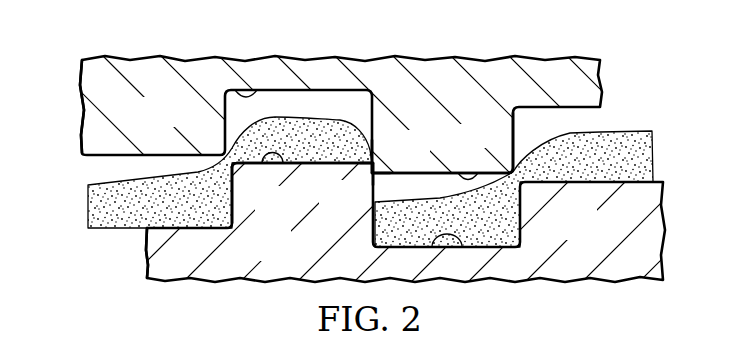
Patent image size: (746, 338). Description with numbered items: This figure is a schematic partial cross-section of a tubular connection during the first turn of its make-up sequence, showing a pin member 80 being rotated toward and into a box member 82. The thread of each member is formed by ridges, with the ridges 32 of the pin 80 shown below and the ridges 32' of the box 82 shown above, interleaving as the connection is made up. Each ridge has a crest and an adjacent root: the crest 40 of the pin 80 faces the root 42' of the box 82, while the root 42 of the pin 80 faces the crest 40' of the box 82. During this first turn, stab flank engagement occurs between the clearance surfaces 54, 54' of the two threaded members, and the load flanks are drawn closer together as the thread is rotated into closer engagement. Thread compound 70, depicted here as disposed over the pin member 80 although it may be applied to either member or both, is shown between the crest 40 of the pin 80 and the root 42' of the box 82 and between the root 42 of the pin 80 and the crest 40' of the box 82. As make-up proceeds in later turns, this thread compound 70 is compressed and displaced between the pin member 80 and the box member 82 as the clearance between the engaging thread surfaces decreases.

The ridges of the pin 32 is at (432, 220).
The ridges of the box 32' is at (370, 120).
The crest of the pin 40 is at (302, 188).
The crest of the box 40' is at (442, 146).
The root of the pin 42 is at (450, 283).
The root of the box 42' is at (249, 54).
The clearance surface of the pin 54 is at (347, 184).
The clearance surface of the box 54' is at (399, 150).
The thread compound 70 is at (277, 120).
The pin member 80 is at (147, 240).
The box member 82 is at (88, 72).